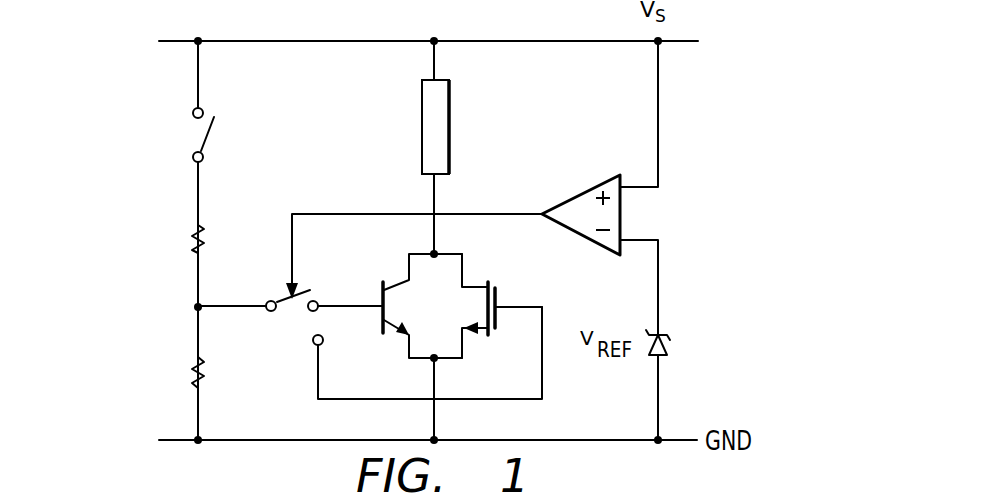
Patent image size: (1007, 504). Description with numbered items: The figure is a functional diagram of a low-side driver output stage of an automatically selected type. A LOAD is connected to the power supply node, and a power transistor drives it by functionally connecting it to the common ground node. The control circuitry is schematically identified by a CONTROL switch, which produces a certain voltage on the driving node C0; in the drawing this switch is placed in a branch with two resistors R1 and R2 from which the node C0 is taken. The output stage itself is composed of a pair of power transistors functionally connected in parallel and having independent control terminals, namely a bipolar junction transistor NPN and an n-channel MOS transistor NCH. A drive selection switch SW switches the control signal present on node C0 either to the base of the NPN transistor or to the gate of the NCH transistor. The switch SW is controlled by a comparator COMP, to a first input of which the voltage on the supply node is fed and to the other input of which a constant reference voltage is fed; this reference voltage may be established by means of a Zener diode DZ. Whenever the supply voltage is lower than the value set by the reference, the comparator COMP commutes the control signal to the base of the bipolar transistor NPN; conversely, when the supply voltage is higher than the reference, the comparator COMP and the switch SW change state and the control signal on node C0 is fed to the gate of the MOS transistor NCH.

The control switch CONTROL is at (151, 135).
The resistor R1 is at (182, 240).
The resistor R2 is at (182, 375).
The driving node C0 is at (176, 310).
The drive selection switch SW is at (290, 319).
The load LOAD is at (421, 128).
The bipolar junction transistor NPN is at (405, 301).
The n-channel MOS transistor NCH is at (502, 301).
The comparator COMP is at (579, 195).
The Zener diode DZ is at (677, 345).